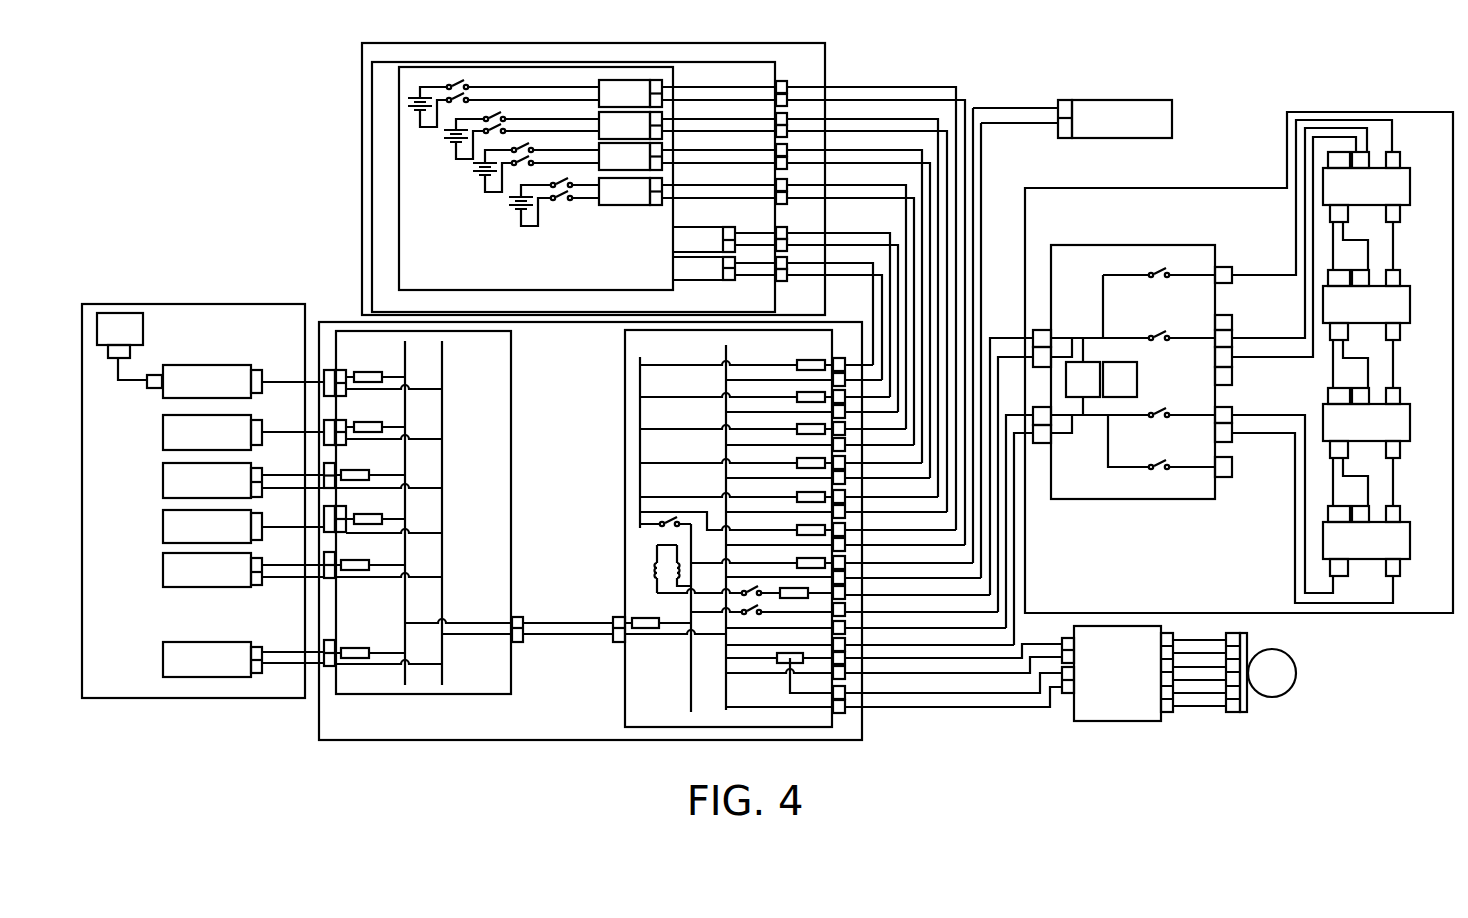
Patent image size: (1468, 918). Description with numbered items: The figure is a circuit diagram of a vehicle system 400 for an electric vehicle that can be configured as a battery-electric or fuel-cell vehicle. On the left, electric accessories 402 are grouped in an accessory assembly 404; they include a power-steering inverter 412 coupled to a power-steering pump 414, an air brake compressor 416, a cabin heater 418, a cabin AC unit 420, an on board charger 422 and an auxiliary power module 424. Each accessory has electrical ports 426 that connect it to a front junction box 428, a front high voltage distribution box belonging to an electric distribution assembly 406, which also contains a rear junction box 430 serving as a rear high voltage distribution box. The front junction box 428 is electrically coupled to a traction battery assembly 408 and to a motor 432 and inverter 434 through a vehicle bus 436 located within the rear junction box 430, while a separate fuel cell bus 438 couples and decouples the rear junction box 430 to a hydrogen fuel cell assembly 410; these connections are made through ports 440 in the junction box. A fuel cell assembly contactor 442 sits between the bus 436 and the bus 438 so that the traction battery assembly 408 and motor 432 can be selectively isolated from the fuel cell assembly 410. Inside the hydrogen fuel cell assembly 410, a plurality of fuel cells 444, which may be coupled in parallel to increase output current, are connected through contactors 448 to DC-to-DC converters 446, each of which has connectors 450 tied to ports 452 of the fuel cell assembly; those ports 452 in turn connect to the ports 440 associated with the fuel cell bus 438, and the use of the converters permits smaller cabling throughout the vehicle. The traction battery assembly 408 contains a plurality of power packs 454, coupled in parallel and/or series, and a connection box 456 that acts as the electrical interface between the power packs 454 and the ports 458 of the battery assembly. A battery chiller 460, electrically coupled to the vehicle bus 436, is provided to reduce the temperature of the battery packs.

The vehicle system 400 is at (187, 127).
The electric accessories 402 is at (211, 358).
The accessory assembly 404 is at (130, 304).
The electric distribution assembly 406 is at (330, 741).
The traction battery assembly 408 is at (1092, 188).
The hydrogen fuel cell assembly 410 is at (425, 46).
The power-steering inverter 412 is at (180, 365).
The power-steering pump 414 is at (160, 336).
The air brake compressor 416 is at (163, 432).
The cabin heater 418 is at (163, 480).
The cabin AC unit 420 is at (163, 527).
The on board charger 422 is at (163, 663).
The auxiliary power module 424 is at (163, 570).
The electrical ports 426 is at (256, 588).
The front junction box 428 is at (345, 694).
The rear junction box 430 is at (625, 722).
The motor 432 is at (1272, 698).
The inverter 434 is at (1118, 722).
The bus 436 is at (691, 686).
The bus 438 is at (640, 390).
The ports 440 is at (834, 360).
The fuel cell assembly contactor 442 is at (657, 533).
The fuel cells 444 is at (448, 133).
The DC-to-DC converters 446 is at (629, 78).
The contactors 448 is at (461, 80).
The connectors 450 is at (658, 78).
The ports 452 is at (786, 80).
The power packs 454 is at (1430, 188).
The connection box 456 is at (1152, 245).
The ports 458 is at (1041, 328).
The battery chiller 460 is at (1160, 98).